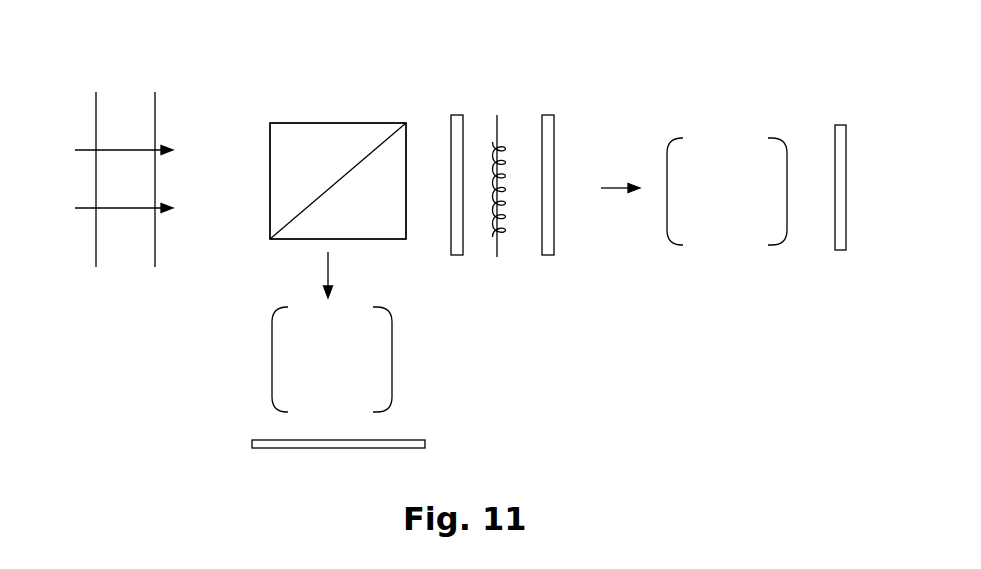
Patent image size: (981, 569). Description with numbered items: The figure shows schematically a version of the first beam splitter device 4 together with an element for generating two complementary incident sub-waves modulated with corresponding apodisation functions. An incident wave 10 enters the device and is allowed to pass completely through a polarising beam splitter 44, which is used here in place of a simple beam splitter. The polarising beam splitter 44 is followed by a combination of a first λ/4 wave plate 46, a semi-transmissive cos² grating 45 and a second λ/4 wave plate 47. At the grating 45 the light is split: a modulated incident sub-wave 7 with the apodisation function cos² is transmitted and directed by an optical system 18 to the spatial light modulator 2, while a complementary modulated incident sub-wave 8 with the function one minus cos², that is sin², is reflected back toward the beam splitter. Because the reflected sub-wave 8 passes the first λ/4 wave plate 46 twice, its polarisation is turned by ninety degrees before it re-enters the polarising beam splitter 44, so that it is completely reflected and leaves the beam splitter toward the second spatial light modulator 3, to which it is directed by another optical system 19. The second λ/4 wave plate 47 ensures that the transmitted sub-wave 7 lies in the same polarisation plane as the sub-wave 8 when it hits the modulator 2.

The incident wave 10 is at (115, 166).
The first beam splitter device 4 is at (321, 62).
The polarising beam splitter 44 is at (354, 97).
The first λ/4 wave plate 46 is at (467, 102).
The semi-transmissive cos² grating 45 is at (514, 109).
The second λ/4 wave plate 47 is at (573, 101).
The modulated incident sub-wave 7 is at (620, 213).
The optical system 18 is at (727, 191).
The spatial light modulator 2 is at (842, 164).
The modulated incident sub-wave 8 is at (315, 275).
The optical system 19 is at (332, 359).
The second spatial light modulator 3 is at (358, 448).